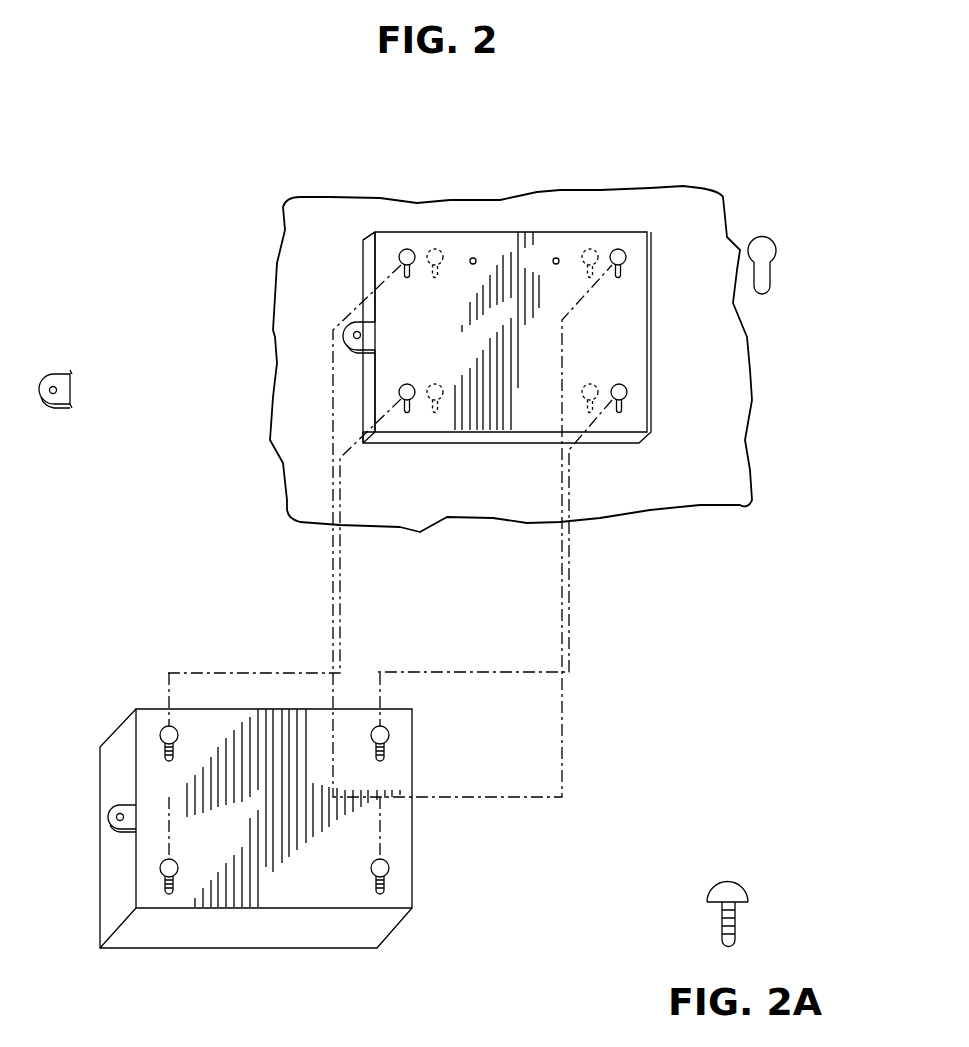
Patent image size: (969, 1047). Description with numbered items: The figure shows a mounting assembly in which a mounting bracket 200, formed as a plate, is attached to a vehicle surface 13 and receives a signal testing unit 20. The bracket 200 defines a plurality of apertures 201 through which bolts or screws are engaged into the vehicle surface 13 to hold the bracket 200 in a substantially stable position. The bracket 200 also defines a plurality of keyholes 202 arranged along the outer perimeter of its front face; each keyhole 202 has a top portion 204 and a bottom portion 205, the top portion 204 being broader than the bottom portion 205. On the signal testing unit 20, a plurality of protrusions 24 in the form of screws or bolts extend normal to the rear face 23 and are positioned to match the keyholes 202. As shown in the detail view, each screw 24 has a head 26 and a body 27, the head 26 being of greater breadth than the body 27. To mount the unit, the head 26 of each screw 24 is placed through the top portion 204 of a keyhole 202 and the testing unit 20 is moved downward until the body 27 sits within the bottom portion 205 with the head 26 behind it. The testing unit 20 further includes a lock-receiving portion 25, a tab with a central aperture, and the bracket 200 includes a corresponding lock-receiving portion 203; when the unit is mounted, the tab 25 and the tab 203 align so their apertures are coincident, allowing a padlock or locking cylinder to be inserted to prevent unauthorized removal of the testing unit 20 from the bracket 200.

In FIG. 2, the vehicle surface 13 is at (322, 265).
In FIG. 2, the mounting bracket 200 is at (357, 227).
In FIG. 2, the apertures 201 is at (473, 255).
In FIG. 2, the keyholes 202 is at (630, 248).
In FIG. 2, the lock-receiving portion 203 is at (75, 385).
In FIG. 2, the top portion 204 is at (780, 258).
In FIG. 2, the bottom portion 205 is at (780, 282).
In FIG. 2, the signal testing unit 20 is at (373, 962).
In FIG. 2, the rear face 23 is at (148, 750).
In FIG. 2, the protrusions 24 is at (387, 877).
In FIG. 2A, the protrusions 24 is at (776, 884).
In FIG. 2, the lock-receiving portion 25 is at (107, 817).
In FIG. 2A, the head 26 is at (748, 893).
In FIG. 2A, the body 27 is at (738, 928).